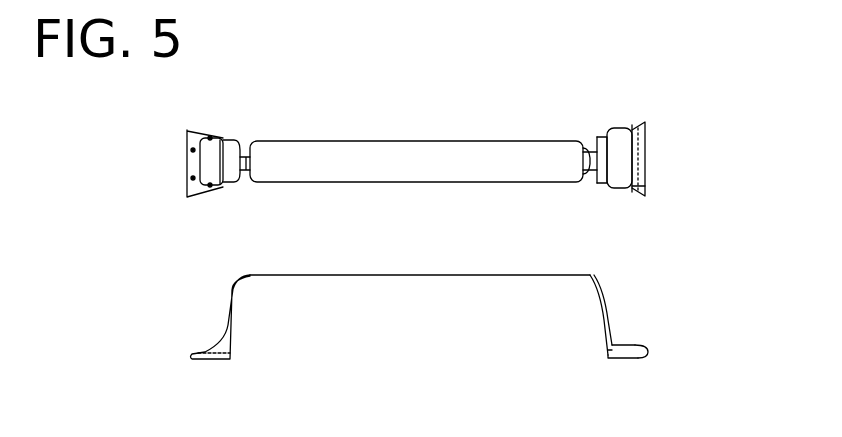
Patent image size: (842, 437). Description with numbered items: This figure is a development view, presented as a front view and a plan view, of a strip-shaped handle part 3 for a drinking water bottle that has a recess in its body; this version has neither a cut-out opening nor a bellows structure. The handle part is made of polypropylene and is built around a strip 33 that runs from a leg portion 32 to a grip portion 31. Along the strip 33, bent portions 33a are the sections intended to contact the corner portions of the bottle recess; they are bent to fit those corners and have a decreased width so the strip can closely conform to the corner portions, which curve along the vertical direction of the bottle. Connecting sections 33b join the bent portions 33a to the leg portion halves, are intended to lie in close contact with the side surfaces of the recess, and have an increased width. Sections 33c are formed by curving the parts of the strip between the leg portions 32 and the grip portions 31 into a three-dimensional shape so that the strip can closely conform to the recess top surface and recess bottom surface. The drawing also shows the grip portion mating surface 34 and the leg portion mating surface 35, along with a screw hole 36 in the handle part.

The strip-shaped handle part 3 is at (460, 108).
The grip portion 31 is at (638, 124).
The leg portion 32 is at (612, 135).
The strip 33 is at (311, 165).
The bent portion 33a is at (583, 157).
The connecting section of strip 33b is at (598, 157).
The section of strip in close contact with recess top or bottom surface 33c is at (619, 353).
The grip portion mating surface 34 is at (643, 158).
The leg portion mating surface 35 is at (645, 185).
The screw hole 36 is at (213, 134).